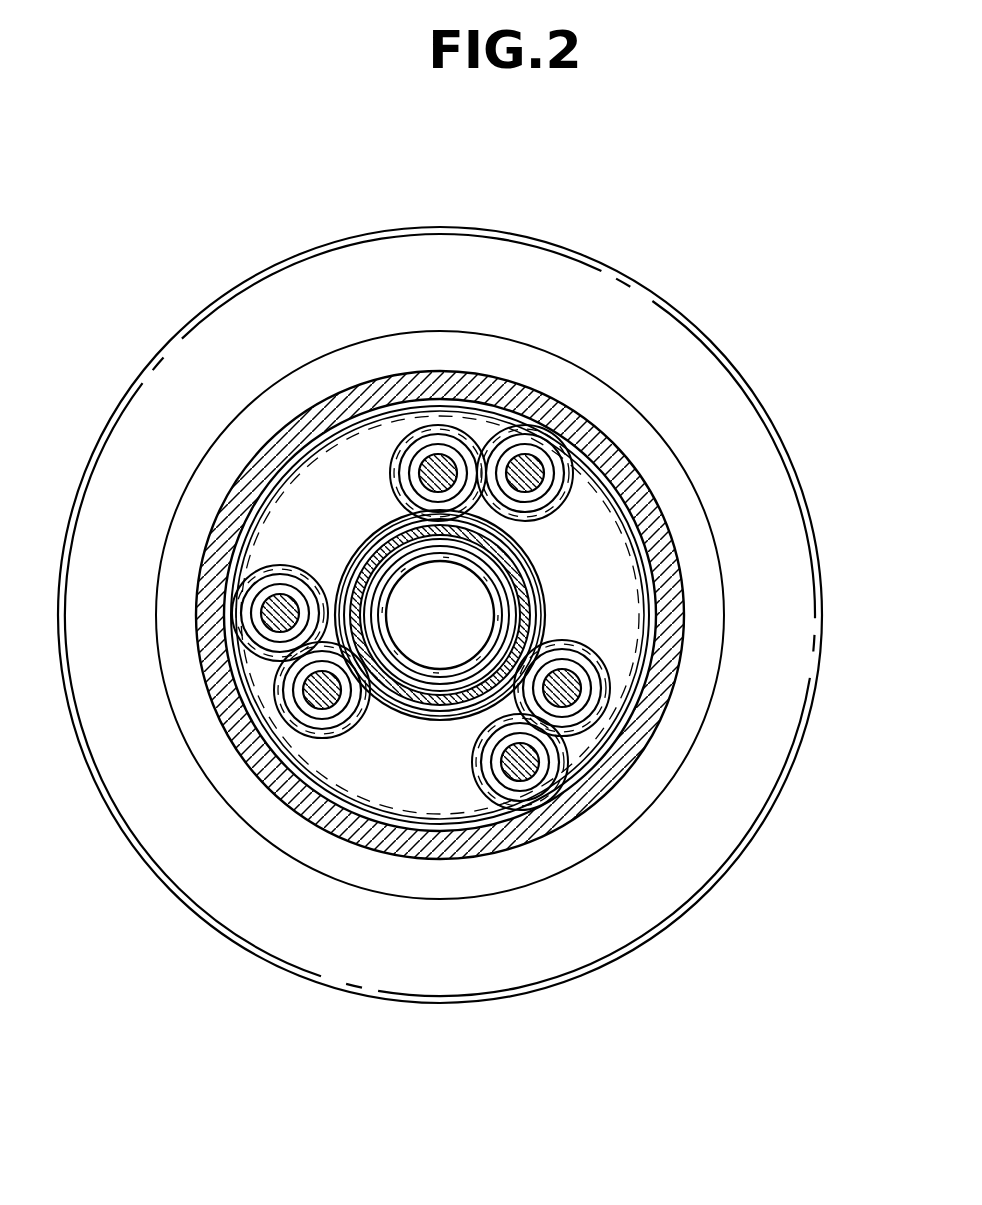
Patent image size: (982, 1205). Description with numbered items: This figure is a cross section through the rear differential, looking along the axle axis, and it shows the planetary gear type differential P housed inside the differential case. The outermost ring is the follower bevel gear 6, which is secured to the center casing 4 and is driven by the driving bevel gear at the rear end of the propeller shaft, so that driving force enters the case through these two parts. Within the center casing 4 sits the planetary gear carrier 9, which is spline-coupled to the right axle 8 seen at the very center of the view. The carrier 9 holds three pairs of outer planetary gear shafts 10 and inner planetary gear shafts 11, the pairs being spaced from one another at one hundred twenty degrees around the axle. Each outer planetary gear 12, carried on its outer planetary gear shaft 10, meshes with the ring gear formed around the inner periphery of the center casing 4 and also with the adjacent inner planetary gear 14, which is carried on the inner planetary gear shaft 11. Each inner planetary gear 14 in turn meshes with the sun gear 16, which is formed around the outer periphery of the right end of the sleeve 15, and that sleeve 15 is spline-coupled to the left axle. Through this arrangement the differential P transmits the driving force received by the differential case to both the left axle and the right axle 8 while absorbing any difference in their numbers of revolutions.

The center casing 4 is at (378, 385).
The follower bevel gear 6 is at (562, 270).
The right axle 8 is at (452, 633).
The planetary gear carrier 9 is at (498, 613).
The outer planetary gear shaft 10 is at (283, 592).
The inner planetary gear shaft 11 is at (410, 476).
The outer planetary gear 12 is at (600, 482).
The inner planetary gear 14 is at (456, 438).
The sleeve 15 is at (410, 706).
The sun gear 16 is at (374, 555).
The planetary gear type differential P is at (603, 574).